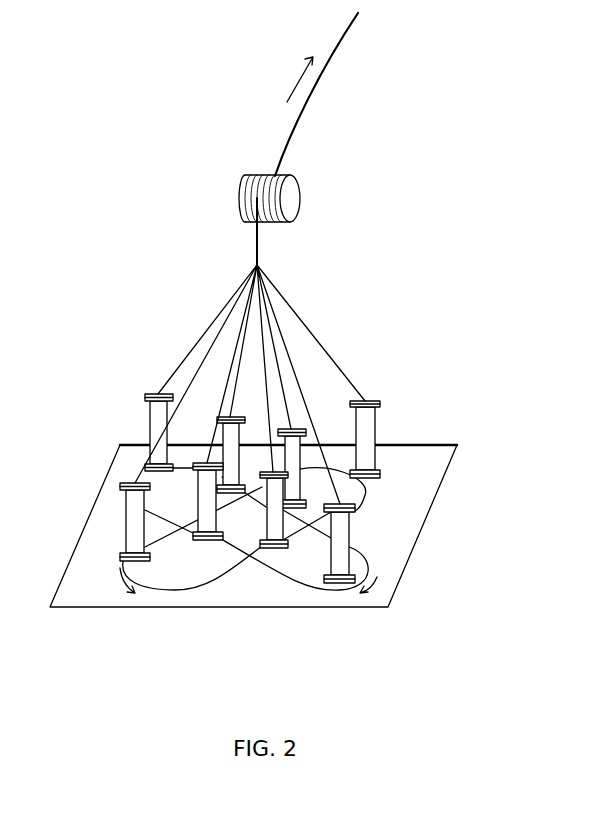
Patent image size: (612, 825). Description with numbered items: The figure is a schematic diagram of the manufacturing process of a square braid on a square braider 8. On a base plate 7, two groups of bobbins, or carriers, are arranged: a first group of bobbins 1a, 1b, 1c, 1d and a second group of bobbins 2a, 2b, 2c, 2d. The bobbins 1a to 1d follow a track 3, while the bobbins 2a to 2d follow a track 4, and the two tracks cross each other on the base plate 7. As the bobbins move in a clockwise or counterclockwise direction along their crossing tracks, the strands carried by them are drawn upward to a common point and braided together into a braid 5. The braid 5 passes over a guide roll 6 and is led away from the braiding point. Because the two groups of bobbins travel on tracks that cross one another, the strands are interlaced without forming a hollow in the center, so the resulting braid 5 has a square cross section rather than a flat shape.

The bobbin 1a is at (122, 527).
The bobbin 1b is at (232, 417).
The bobbin 1c is at (377, 420).
The bobbin 1d is at (275, 550).
The bobbin 2a is at (352, 530).
The bobbin 2b is at (200, 543).
The bobbin 2c is at (148, 427).
The bobbin 2d is at (296, 430).
The track 3 is at (207, 586).
The track 4 is at (317, 590).
The braid 5 is at (325, 75).
The guide roll 6 is at (300, 195).
The base plate 7 is at (446, 480).
The square braider 8 is at (112, 202).